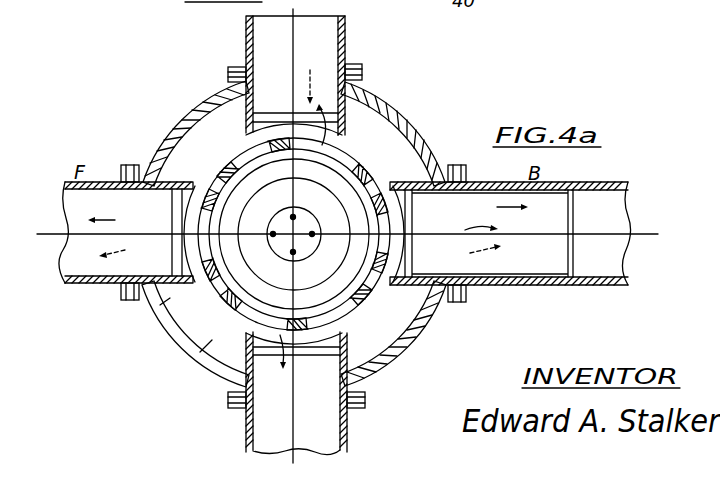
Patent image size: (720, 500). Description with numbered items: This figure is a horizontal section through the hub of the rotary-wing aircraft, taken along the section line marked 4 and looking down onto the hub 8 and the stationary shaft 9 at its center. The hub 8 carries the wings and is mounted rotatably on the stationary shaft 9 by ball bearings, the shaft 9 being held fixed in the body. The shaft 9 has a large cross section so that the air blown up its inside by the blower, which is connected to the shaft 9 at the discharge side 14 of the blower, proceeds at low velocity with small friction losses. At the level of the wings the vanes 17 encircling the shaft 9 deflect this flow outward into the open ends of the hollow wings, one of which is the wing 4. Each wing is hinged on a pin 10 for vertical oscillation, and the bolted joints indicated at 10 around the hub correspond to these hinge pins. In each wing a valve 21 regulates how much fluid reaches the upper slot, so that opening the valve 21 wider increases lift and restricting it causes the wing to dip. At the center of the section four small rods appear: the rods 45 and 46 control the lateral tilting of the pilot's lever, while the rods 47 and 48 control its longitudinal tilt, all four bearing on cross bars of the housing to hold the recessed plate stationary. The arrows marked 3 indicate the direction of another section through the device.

The section line 3- 3 is at (293, 9).
The wing 4 is at (37, 234).
The hub 8 is at (173, 95).
The stationary shaft 9 is at (357, 172).
The pin 10 is at (372, 78).
The discharge side of the blower 14 is at (357, 301).
The vanes 17 is at (259, 277).
The valve 21 is at (270, 43).
The rod 45 is at (294, 256).
The rod 46 is at (295, 215).
The rod 47 is at (270, 234).
The rod 48 is at (315, 234).